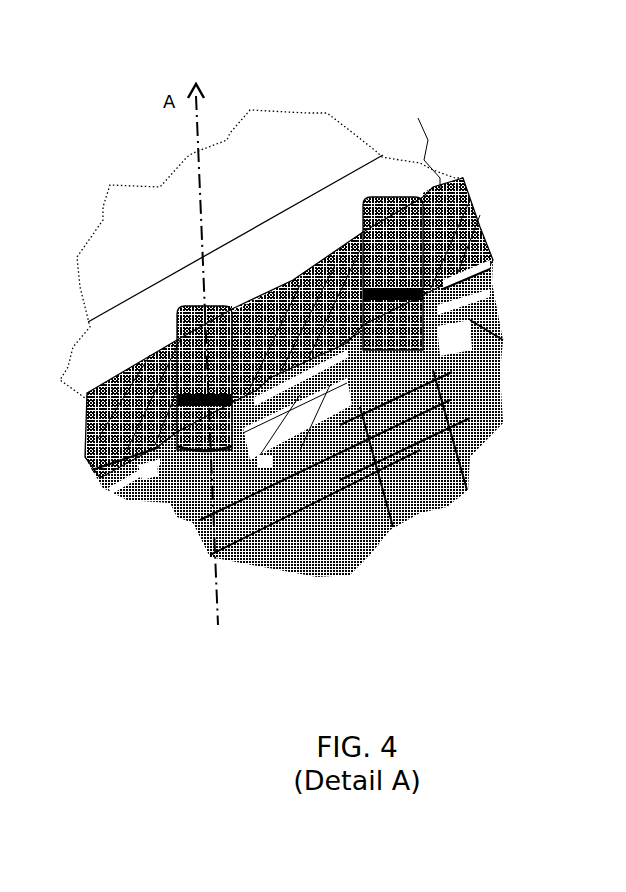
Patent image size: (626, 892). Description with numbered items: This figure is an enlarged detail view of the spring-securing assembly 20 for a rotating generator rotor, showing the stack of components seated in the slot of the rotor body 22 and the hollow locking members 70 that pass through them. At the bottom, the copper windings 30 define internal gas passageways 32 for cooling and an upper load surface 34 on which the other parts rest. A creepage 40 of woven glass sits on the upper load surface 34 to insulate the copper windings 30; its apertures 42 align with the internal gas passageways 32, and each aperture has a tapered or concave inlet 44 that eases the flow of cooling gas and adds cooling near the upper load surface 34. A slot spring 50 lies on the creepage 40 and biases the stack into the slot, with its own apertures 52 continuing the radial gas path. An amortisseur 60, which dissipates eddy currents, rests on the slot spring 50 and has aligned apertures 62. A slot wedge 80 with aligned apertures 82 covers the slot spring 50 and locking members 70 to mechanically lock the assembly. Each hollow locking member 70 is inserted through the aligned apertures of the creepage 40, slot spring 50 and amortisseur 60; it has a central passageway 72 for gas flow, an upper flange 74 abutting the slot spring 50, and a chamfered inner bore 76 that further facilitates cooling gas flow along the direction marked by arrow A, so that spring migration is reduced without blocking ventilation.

The assembly 20 is at (490, 140).
The rotor body 22 is at (135, 215).
The copper windings 30 is at (470, 457).
The internal gas passageways 32 is at (373, 487).
The upper load surface 34 is at (452, 360).
The creepage 40 is at (420, 507).
The apertures 42 is at (468, 455).
The tapered or concave inlet 44 is at (265, 467).
The slot spring 50 is at (490, 293).
The apertures 52 is at (153, 470).
The amortisseur 60 is at (493, 260).
The apertures 62 is at (342, 343).
The hollow locking members 70 is at (507, 350).
The central passageway 72 is at (397, 307).
The upper flange 74 is at (243, 405).
The chamfered inner bore 76 is at (176, 468).
The slot wedge 80 is at (421, 144).
The apertures 82 is at (185, 328).